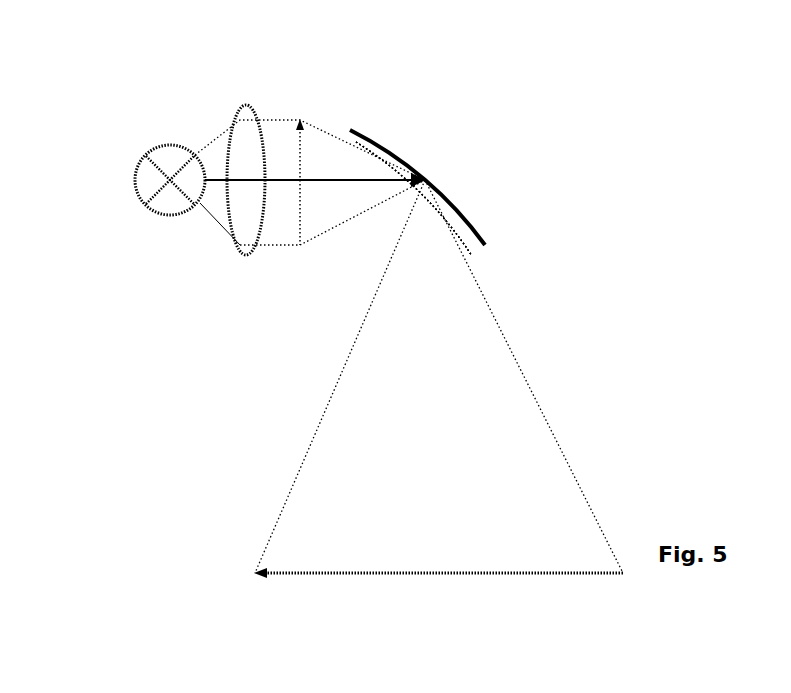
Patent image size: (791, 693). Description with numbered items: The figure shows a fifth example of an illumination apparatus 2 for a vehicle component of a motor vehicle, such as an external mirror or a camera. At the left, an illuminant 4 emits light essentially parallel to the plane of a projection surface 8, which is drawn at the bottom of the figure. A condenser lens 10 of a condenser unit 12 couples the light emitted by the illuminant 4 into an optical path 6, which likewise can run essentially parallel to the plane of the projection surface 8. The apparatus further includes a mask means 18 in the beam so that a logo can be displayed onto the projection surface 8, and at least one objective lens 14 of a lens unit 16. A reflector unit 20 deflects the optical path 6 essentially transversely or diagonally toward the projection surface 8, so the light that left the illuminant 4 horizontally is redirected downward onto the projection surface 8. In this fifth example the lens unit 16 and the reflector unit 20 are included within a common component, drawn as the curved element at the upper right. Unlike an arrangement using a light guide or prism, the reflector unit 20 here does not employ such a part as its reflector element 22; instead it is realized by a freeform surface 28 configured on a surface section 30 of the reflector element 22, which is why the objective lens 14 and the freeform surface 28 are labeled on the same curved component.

The illumination apparatus 2 is at (104, 253).
The illuminant 4 is at (133, 178).
The optical path 6 is at (317, 180).
The projection surface 8 is at (488, 573).
The condenser lens 10 is at (253, 108).
The condenser unit 12 is at (236, 268).
The objective lens 14 is at (423, 172).
The lens unit 16 is at (516, 168).
The mask means 18 is at (298, 202).
The reflector unit 20 is at (490, 232).
The reflector element 22 is at (490, 232).
The freeform surface 28 is at (490, 232).
The surface section 30 is at (490, 232).